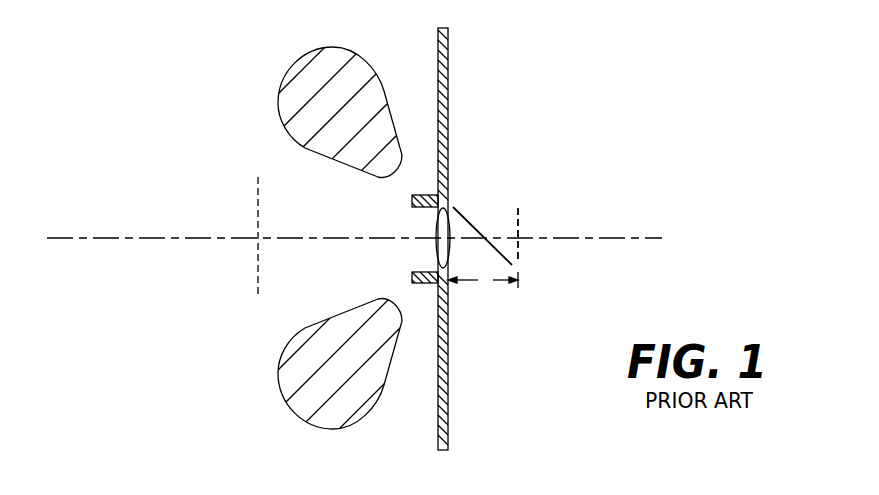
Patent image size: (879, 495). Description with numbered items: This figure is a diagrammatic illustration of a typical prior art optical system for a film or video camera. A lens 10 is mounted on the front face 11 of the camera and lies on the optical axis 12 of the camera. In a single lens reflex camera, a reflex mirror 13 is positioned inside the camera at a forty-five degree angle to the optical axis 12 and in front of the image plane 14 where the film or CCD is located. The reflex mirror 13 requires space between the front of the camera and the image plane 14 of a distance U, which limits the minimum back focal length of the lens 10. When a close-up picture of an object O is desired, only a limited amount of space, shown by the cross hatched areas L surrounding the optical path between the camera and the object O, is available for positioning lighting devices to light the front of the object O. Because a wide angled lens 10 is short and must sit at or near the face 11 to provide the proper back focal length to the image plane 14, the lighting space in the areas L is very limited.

The lens 10 is at (434, 248).
The front face 11 is at (438, 400).
The optical axis 12 is at (587, 238).
The reflex mirror 13 is at (462, 211).
The image plane 14 is at (520, 220).
The cross hatched areas L is at (312, 82).
The object O is at (258, 187).
The distance U is at (483, 281).